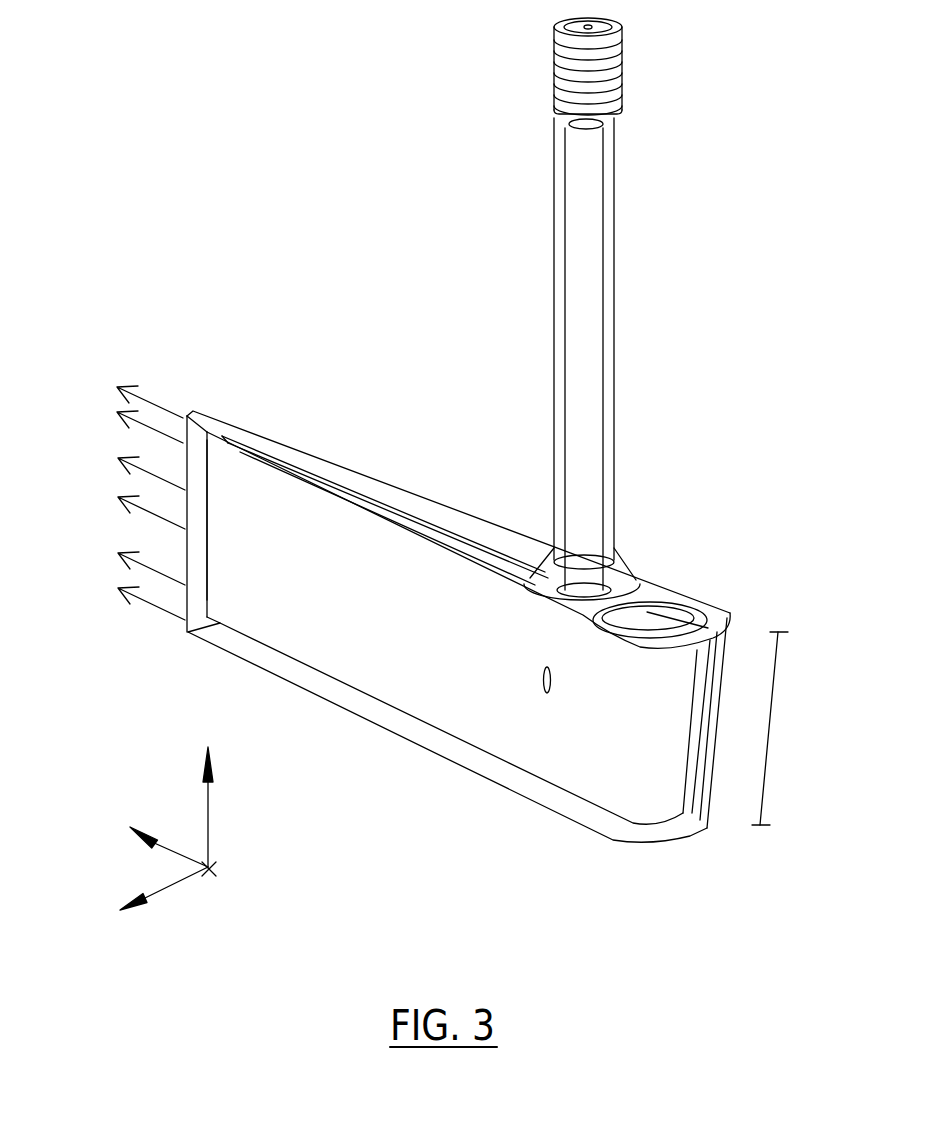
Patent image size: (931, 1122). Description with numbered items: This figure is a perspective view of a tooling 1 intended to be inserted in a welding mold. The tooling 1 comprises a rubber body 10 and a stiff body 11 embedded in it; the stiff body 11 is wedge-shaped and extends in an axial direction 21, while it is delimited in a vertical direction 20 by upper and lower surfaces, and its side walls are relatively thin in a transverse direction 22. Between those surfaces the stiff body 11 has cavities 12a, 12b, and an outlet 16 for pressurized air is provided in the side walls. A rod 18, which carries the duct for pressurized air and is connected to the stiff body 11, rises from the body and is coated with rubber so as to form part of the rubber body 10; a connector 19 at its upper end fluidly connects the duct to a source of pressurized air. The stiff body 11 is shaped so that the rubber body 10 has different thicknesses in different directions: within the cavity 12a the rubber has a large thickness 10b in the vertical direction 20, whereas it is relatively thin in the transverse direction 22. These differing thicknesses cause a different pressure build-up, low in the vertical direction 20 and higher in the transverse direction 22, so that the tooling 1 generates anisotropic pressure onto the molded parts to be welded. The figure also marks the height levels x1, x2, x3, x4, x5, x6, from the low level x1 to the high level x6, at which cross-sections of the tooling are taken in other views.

The tooling 1 is at (258, 270).
The rubber body 10 is at (267, 437).
The large thickness 10b is at (770, 717).
The stiff body 11 is at (230, 487).
The cavity 12a is at (503, 567).
The cavity 12b is at (653, 623).
The outlet 16 is at (541, 680).
The rod 18 is at (585, 297).
The connector 19 is at (563, 72).
The vertical direction 20 is at (210, 800).
The axial direction 21 is at (173, 845).
The transverse direction 22 is at (178, 883).
The height level x1 is at (120, 585).
The height level x2 is at (137, 557).
The height level x3 is at (135, 497).
The height level x4 is at (138, 455).
The height level x5 is at (117, 408).
The height level x6 is at (138, 388).